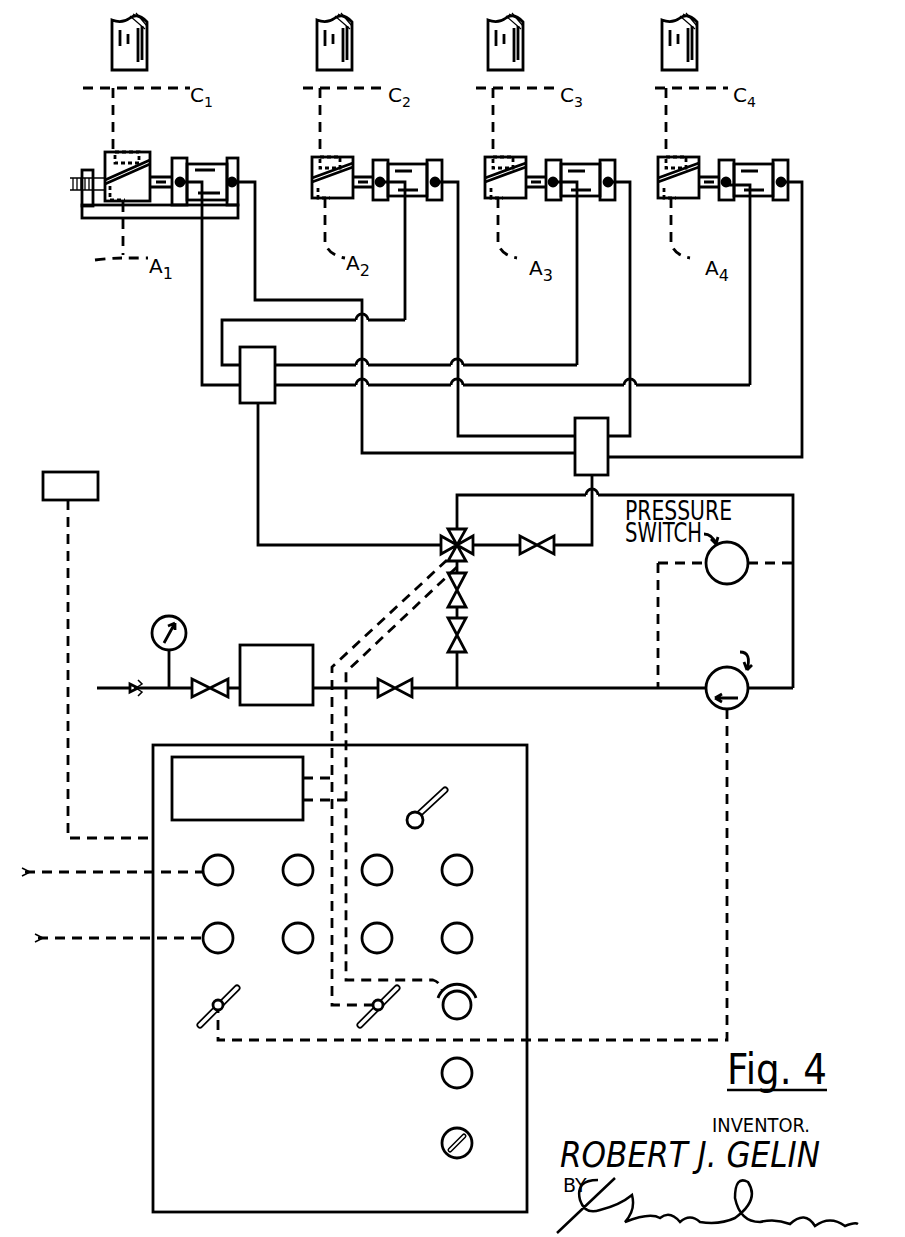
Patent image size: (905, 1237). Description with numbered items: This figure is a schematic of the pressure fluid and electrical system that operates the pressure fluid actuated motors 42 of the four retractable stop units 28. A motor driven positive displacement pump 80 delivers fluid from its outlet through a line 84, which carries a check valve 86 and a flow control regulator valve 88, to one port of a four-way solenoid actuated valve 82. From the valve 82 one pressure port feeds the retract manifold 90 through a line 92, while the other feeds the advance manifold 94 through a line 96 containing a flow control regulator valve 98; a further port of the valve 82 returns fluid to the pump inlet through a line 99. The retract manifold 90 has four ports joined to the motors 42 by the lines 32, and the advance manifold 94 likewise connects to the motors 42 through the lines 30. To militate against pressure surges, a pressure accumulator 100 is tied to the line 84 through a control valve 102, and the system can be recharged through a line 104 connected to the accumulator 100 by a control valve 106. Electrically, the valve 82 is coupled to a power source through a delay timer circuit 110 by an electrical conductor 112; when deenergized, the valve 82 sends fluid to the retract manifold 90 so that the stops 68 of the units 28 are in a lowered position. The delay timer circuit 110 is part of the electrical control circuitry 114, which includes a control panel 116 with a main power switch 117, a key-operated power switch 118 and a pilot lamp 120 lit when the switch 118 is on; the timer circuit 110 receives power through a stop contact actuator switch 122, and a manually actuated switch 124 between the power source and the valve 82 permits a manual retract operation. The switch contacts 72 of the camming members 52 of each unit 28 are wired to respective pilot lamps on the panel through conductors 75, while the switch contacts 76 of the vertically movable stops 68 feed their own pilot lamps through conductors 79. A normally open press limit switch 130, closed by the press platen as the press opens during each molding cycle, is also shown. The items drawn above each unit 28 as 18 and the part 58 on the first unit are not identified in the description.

The container 18 is at (148, 34).
The conductors 79 is at (92, 92).
The adjusting screw 58 is at (103, 176).
The switch contacts 76 is at (120, 150).
The stops 68 is at (148, 165).
The camming members 52 is at (145, 178).
The retractable stop units 28 is at (232, 148).
The pressure fluid actuated motors 42 is at (212, 178).
The switch contacts 72 is at (100, 212).
The conductors 75 is at (103, 898).
The lines 30 is at (255, 272).
The lines 32 is at (202, 300).
The retract manifold 90 is at (286, 360).
The line 92 is at (262, 458).
The advance manifold 94 is at (572, 410).
The press limit switch 130 is at (72, 472).
The line 99 is at (517, 495).
The four-way solenoid actuated valve 82 is at (443, 526).
The flow control regulator valve 98 is at (540, 537).
The line 96 is at (572, 548).
The electrical conductor 112 is at (392, 600).
The flow control regulator valve 88 is at (468, 590).
The check valve 86 is at (468, 635).
The line 104 is at (140, 685).
The pressure accumulator 100 is at (298, 688).
The control valve 106 is at (212, 695).
The control valve 102 is at (400, 697).
The line 84 is at (627, 688).
The pump 80 is at (745, 703).
The delay timer circuit 110 is at (185, 757).
The main power switch 117 is at (412, 811).
The electrical control circuitry 114 is at (136, 1078).
The control panel 116 is at (160, 1172).
The stop contact actuator switch 122 is at (383, 1010).
The manually actuated switch 124 is at (471, 1010).
The pilot lamp 120 is at (444, 1083).
The key-operated power switch 118 is at (445, 1137).